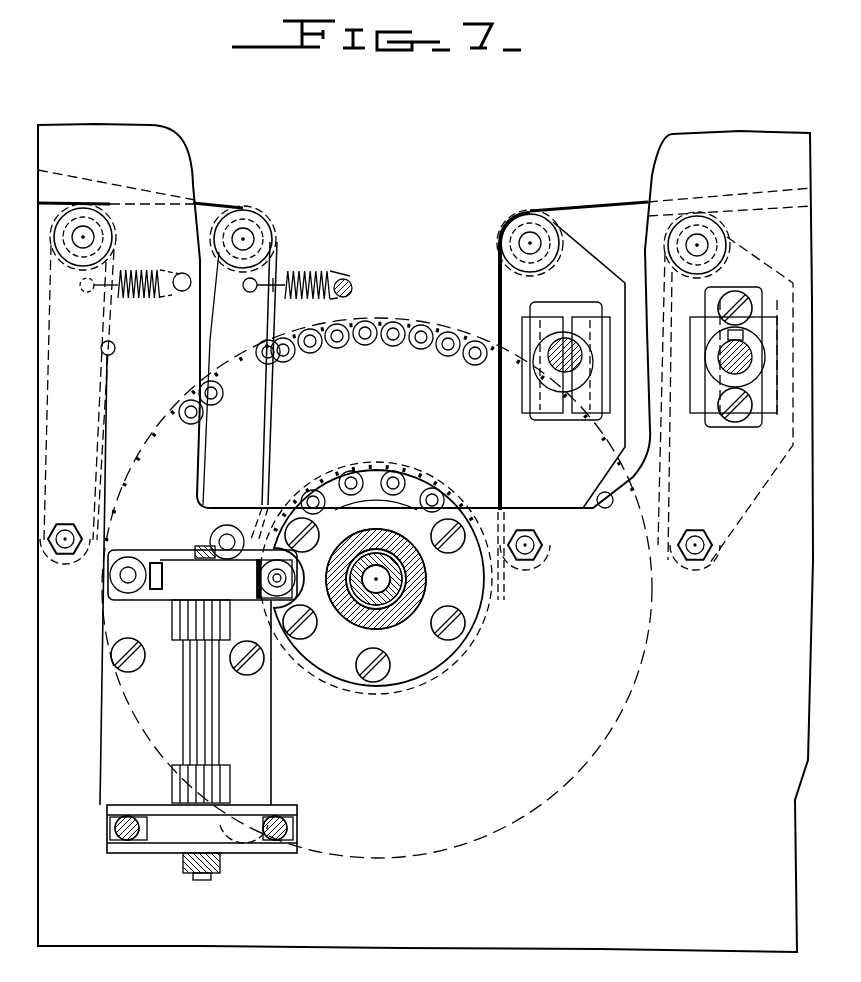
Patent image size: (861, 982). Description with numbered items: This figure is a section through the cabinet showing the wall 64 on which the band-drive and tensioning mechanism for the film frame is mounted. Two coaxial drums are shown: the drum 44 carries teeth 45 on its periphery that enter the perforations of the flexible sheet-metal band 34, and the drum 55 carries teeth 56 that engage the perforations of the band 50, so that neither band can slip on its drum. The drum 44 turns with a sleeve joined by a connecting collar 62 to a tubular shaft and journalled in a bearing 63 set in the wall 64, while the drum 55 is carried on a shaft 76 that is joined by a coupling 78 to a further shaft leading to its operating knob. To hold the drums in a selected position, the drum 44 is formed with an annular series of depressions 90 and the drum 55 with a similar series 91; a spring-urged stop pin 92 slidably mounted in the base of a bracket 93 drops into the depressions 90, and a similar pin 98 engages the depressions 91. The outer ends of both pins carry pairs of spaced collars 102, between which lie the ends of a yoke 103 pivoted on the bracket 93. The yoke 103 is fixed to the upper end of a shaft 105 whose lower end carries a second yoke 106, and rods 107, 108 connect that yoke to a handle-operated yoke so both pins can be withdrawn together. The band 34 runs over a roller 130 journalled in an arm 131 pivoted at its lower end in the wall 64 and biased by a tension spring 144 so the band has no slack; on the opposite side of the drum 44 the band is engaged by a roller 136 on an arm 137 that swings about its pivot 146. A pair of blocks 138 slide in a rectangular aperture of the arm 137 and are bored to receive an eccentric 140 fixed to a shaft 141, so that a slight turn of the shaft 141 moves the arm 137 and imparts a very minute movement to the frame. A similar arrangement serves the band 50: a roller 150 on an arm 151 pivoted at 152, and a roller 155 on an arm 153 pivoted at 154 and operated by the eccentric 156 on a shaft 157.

The band 34 is at (215, 202).
The drum 44 is at (383, 470).
The teeth 45 is at (345, 468).
The band 50 is at (50, 208).
The drum 55 is at (455, 335).
The teeth 56 is at (397, 316).
The connecting collar 62 is at (410, 574).
The bearing 63 is at (462, 650).
The wall 64 is at (447, 948).
The shaft 76 is at (388, 583).
The coupling 78 is at (355, 620).
The depressions 90 is at (400, 480).
The depressions 91 is at (448, 358).
The stop pin 92 is at (258, 576).
The bracket 93 is at (100, 745).
The pin 98 is at (158, 574).
The collars 102 is at (130, 594).
The yoke 103 is at (202, 562).
The shaft 105 is at (220, 722).
The second yoke 106 is at (202, 829).
The rod 107 is at (290, 828).
The rod 108 is at (112, 827).
The roller 130 is at (275, 226).
The arm 131 is at (229, 378).
The roller 136 is at (526, 213).
The arm 137 is at (576, 365).
The blocks 138 is at (548, 325).
The eccentric 140 is at (556, 378).
The shaft 141 is at (572, 345).
The tension spring 144 is at (312, 276).
The pivot 146 is at (528, 560).
The roller 150 is at (112, 240).
The arm 151 is at (79, 392).
The pivot 152 is at (66, 552).
The arm 153 is at (725, 402).
The pivot 154 is at (700, 560).
The roller 155 is at (665, 238).
The eccentric 156 is at (760, 395).
The shaft 157 is at (727, 372).